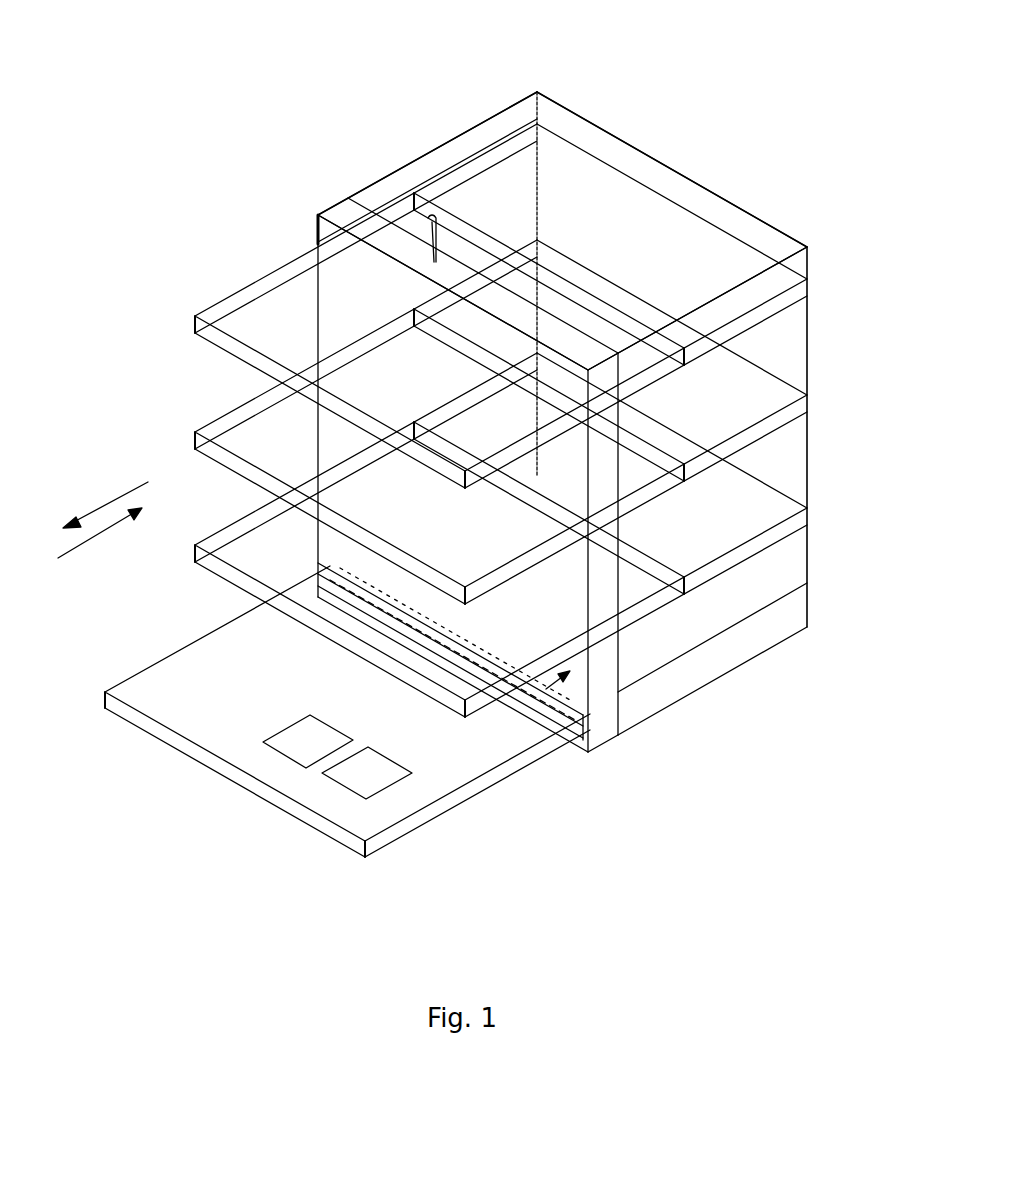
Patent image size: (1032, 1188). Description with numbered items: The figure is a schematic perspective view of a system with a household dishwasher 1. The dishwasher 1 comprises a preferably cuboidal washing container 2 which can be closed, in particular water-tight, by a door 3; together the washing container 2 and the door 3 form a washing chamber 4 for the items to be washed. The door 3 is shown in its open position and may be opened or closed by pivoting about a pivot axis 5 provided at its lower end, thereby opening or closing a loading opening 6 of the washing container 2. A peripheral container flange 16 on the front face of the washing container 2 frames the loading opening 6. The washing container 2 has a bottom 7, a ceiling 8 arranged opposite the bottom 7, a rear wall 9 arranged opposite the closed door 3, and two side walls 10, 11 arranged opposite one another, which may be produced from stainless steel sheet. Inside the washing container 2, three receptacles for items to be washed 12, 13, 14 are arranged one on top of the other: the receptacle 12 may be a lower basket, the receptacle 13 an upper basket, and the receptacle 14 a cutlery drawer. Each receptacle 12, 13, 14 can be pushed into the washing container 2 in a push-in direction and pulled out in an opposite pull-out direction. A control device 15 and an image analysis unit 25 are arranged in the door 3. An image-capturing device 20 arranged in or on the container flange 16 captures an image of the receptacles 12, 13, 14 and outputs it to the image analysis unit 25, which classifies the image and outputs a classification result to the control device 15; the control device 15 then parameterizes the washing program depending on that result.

The dishwasher 1 is at (362, 92).
The washing container 2 is at (361, 187).
The door 3 is at (195, 661).
The washing chamber 4 is at (580, 479).
The pivot axis 5 is at (598, 746).
The loading opening 6 is at (537, 723).
The bottom 7 is at (687, 637).
The ceiling 8 is at (588, 143).
The rear wall 9 is at (706, 205).
The side wall 10 is at (437, 165).
The side wall 11 is at (777, 372).
The receptacle for items to be washed 12 is at (222, 538).
The receptacle for items to be washed 13 is at (222, 418).
The receptacle for items to be washed 14 is at (262, 296).
The control device 15 is at (287, 758).
The container flange 16 is at (337, 210).
The image-capturing device 20 is at (432, 222).
The image analysis unit 25 is at (338, 785).